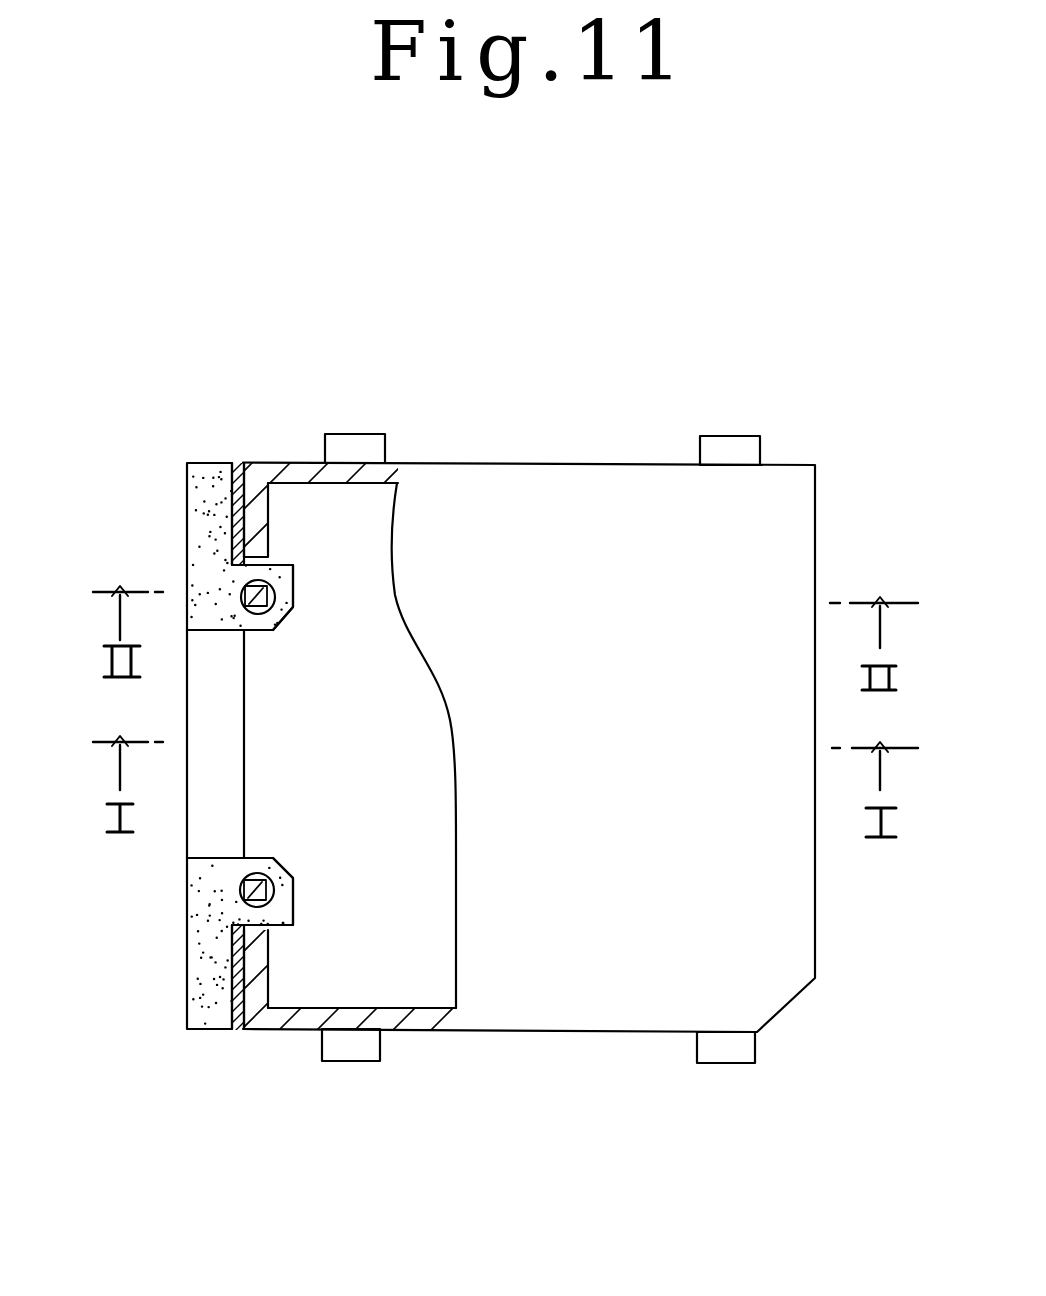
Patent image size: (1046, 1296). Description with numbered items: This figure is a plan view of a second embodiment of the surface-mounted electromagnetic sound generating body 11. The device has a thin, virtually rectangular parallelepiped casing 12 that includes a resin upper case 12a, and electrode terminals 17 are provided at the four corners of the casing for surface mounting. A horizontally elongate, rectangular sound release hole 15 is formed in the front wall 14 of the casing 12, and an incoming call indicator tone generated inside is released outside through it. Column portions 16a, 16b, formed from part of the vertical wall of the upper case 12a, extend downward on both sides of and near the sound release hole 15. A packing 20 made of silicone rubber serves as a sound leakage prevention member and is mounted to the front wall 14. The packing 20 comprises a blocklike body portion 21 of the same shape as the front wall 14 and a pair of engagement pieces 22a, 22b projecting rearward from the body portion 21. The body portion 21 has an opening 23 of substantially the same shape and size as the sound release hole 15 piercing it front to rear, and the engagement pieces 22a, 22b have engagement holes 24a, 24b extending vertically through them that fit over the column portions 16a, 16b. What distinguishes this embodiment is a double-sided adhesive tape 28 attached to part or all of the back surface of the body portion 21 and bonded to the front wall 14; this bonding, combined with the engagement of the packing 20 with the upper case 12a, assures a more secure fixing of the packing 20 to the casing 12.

The surface-mounted electromagnetic sound generating body 11 is at (160, 1062).
The casing 12 is at (650, 460).
The upper case 12a is at (278, 462).
The front wall 14 is at (232, 523).
The sound release hole 15 is at (268, 708).
The column portion 16a is at (258, 600).
The column portion 16b is at (256, 882).
The electrode terminals 17 is at (362, 436).
The packing 20 is at (184, 482).
The body portion 21 is at (187, 960).
The engagement piece 22a is at (293, 578).
The engagement piece 22b is at (283, 906).
The opening 23 is at (184, 820).
The engagement hole 24a is at (280, 600).
The engagement hole 24b is at (274, 882).
The double-sided adhesive tape 28 is at (236, 462).